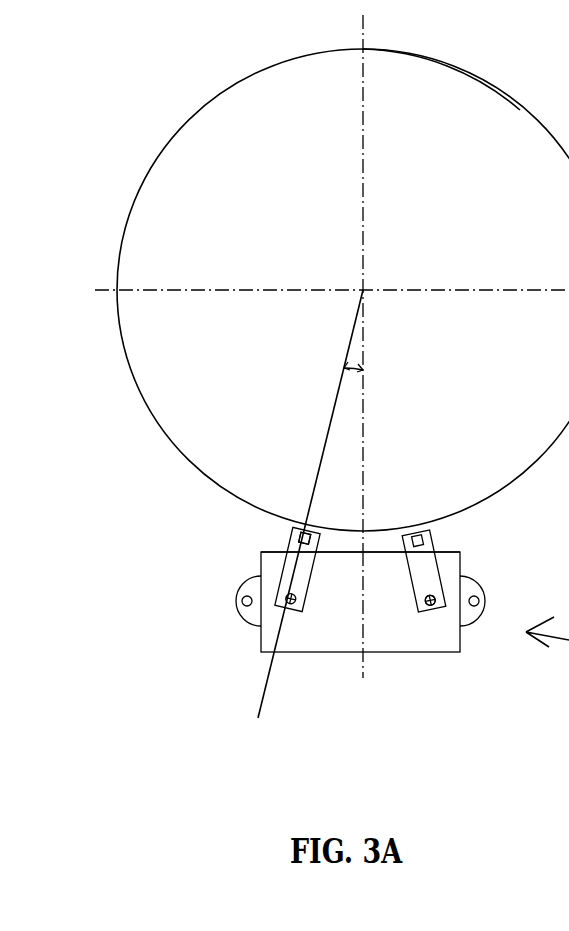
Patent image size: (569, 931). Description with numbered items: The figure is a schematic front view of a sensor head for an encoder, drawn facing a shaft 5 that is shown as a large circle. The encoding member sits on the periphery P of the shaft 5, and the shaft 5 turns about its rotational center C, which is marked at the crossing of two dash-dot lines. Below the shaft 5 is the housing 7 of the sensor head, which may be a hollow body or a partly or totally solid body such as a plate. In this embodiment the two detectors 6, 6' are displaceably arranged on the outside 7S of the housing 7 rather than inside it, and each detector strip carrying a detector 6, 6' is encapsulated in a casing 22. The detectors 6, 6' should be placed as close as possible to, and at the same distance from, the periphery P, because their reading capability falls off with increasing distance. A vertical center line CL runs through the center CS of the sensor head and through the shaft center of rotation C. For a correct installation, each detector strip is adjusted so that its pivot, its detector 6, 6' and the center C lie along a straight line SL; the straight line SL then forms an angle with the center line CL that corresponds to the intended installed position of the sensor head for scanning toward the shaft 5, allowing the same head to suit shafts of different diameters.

The shaft 5 is at (291, 216).
The periphery P is at (443, 64).
The rotational center C is at (363, 290).
The center line CL is at (365, 438).
The center of the sensor head CS is at (361, 630).
The straight line SL is at (327, 435).
The housing 7 is at (331, 640).
The outside of the housing 7S is at (396, 601).
The detector 6' is at (269, 567).
The detector 6 is at (452, 558).
The contact point B is at (325, 529).
The casing 22 is at (423, 573).